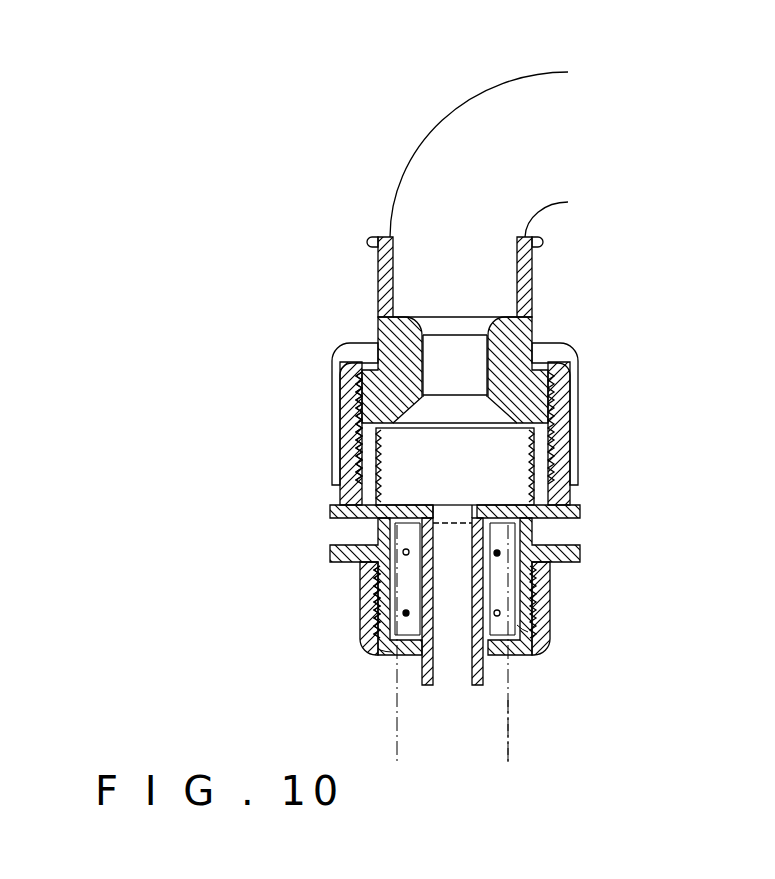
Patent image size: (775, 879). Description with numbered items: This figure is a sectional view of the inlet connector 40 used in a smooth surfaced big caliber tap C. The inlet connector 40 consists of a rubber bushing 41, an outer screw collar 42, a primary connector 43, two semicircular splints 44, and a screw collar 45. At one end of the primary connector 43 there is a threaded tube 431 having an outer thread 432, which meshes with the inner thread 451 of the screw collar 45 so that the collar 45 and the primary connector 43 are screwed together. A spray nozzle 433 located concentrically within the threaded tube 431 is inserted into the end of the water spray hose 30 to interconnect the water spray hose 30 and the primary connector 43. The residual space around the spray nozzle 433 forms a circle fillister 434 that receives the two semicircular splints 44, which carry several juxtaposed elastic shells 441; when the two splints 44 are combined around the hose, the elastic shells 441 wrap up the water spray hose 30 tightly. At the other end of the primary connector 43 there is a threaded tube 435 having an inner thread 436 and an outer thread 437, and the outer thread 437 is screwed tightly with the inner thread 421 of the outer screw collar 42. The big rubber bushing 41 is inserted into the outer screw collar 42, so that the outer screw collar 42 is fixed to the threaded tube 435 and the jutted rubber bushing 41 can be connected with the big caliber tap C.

The water spray hose 30 is at (510, 733).
The inlet connector 40 is at (313, 398).
The rubber bushing 41 is at (530, 283).
The outer screw collar 42 is at (560, 377).
The inner thread of the outer screw collar 421 is at (402, 428).
The primary connector 43 is at (565, 513).
The threaded tube 431 is at (380, 618).
The outer thread 432 is at (372, 590).
The spray nozzle 433 is at (432, 660).
The circle fillister 434 is at (383, 653).
The threaded tube 435 is at (363, 480).
The inner thread 436 is at (380, 461).
The outer thread 437 is at (356, 440).
The semicircular splints 44 is at (495, 556).
The elastic shells 441 is at (517, 627).
The screw collar 45 is at (538, 592).
The inner thread of the screw collar 451 is at (320, 602).
The smooth surfaced big caliber tap C is at (452, 140).